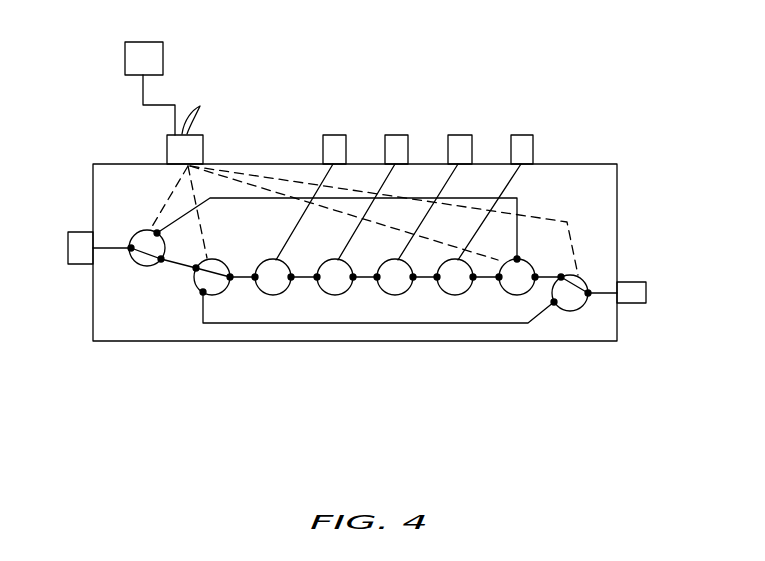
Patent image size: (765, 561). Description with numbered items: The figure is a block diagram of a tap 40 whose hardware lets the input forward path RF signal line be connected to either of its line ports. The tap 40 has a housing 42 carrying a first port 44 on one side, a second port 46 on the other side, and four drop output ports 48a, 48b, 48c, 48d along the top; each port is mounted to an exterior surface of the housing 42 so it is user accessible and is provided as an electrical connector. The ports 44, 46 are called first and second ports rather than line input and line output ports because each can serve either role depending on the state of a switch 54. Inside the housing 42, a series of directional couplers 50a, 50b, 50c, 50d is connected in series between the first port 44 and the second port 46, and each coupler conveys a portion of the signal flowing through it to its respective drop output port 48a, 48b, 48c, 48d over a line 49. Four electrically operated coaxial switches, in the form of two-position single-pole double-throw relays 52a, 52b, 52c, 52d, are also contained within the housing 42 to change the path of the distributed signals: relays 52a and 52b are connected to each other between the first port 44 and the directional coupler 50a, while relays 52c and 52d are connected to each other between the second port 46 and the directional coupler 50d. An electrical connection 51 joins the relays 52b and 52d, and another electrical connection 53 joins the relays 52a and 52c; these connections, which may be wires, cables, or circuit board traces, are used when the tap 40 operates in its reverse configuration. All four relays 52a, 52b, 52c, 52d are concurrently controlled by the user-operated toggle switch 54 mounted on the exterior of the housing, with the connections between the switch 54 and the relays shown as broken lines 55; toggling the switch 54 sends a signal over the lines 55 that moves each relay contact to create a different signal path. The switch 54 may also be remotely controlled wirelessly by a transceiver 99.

The tap 40 is at (653, 68).
The housing 42 is at (93, 181).
The first port 44 is at (75, 264).
The second port 46 is at (636, 303).
The drop output port 48a is at (333, 133).
The drop output port 48b is at (393, 133).
The drop output port 48c is at (458, 133).
The drop output port 48d is at (520, 133).
The line 49 is at (330, 187).
The directional coupler 50a is at (280, 295).
The directional coupler 50b is at (343, 295).
The directional coupler 50c is at (405, 295).
The directional coupler 50d is at (465, 295).
The electrical connection 51 is at (376, 323).
The relay 52a is at (148, 266).
The relay 52b is at (214, 295).
The relay 52c is at (522, 295).
The relay 52d is at (575, 311).
The electrical connection 53 is at (517, 210).
The switch 54 is at (167, 146).
The lines 55 is at (240, 174).
The transceiver 99 is at (150, 88).